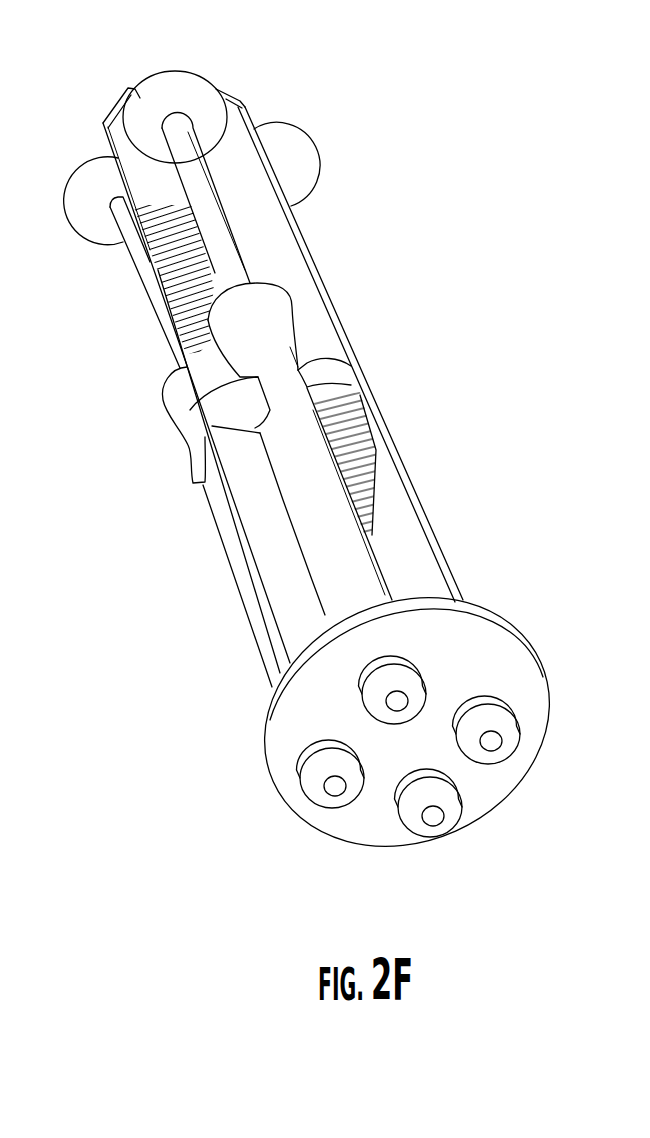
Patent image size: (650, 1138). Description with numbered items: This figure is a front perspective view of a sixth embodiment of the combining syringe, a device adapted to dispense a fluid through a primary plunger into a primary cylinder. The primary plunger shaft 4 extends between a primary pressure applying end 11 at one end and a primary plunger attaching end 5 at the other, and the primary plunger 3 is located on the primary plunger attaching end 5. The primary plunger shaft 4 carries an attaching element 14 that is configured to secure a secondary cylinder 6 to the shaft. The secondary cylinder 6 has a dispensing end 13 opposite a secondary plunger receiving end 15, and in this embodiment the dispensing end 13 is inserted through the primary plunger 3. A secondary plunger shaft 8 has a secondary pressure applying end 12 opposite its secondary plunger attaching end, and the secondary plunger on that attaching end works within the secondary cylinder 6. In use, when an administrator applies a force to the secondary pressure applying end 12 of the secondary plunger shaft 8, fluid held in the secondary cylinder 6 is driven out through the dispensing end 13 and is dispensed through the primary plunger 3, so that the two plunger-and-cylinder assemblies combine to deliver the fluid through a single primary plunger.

The primary plunger 3 is at (326, 823).
The primary plunger shaft 4 is at (318, 262).
The primary plunger attaching end 5 is at (414, 545).
The secondary cylinder 6 is at (302, 512).
The secondary plunger shaft 8 is at (212, 212).
The primary pressure applying end 11 is at (125, 72).
The secondary pressure applying end 12 is at (191, 72).
The dispensing end 13 is at (433, 822).
The attaching element 14 is at (193, 453).
The secondary plunger receiving end 15 is at (212, 258).